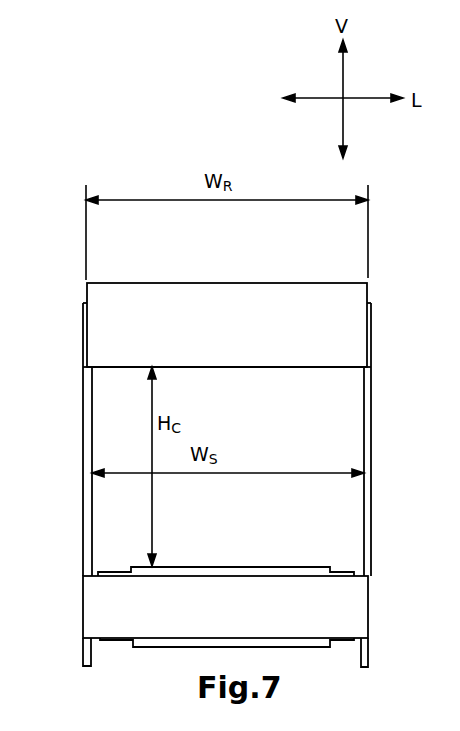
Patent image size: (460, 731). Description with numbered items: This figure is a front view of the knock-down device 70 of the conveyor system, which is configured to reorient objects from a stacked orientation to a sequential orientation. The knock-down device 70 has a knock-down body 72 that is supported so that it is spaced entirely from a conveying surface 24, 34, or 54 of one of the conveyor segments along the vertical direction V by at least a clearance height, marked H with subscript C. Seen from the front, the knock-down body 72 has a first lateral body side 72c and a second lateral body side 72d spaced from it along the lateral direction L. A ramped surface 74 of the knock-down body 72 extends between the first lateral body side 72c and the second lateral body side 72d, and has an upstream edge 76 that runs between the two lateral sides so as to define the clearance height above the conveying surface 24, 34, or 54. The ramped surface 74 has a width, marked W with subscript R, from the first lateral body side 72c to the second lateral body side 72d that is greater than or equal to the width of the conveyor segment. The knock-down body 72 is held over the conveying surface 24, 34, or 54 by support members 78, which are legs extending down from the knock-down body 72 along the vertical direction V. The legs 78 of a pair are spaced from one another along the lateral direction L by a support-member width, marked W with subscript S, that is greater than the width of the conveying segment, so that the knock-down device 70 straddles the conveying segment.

The knock-down device 70 is at (148, 176).
The knock-down body 72 is at (170, 300).
The ramped surface 74 is at (240, 310).
The upstream edge 76 is at (254, 367).
The first lateral body side 72c is at (73, 339).
The second lateral body side 72d is at (381, 313).
The support member 78 is at (82, 420).
The conveying surface 24 is at (184, 592).
The conveying surface 34 is at (184, 592).
The conveying surface 54 is at (200, 562).